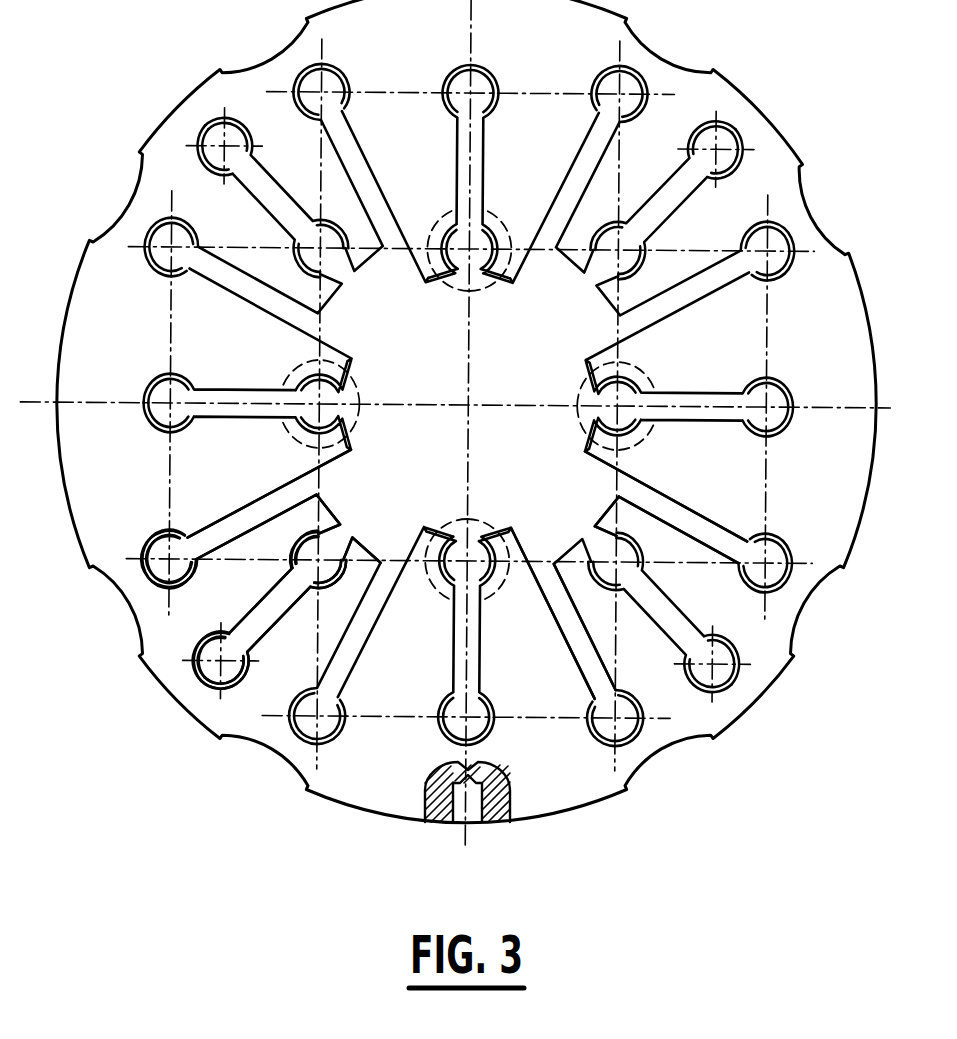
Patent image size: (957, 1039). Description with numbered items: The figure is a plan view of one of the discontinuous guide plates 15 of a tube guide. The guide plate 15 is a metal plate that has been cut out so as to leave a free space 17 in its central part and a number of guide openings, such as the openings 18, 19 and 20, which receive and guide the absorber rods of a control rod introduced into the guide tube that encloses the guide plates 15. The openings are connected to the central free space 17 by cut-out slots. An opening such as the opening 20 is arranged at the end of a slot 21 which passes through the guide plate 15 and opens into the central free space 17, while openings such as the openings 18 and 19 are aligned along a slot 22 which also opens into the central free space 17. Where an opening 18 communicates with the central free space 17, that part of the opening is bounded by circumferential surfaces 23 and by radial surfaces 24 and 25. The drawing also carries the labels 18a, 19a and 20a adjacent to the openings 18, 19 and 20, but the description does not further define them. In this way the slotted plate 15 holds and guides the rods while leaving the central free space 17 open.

The guide plate 15 is at (588, 828).
The free space 17 is at (530, 354).
The guide opening 18 is at (320, 546).
The pointed slot end 18a is at (337, 563).
The guide opening 19 is at (204, 674).
The countersink of bolt hole 19a is at (210, 632).
The guide opening 20 is at (160, 568).
The countersink of bolt hole 20a is at (152, 532).
The slot 21 is at (251, 506).
The slot 22 is at (257, 620).
The circumferential surface 23 is at (617, 516).
The radial surface 24 is at (575, 613).
The radial surface 25 is at (640, 517).